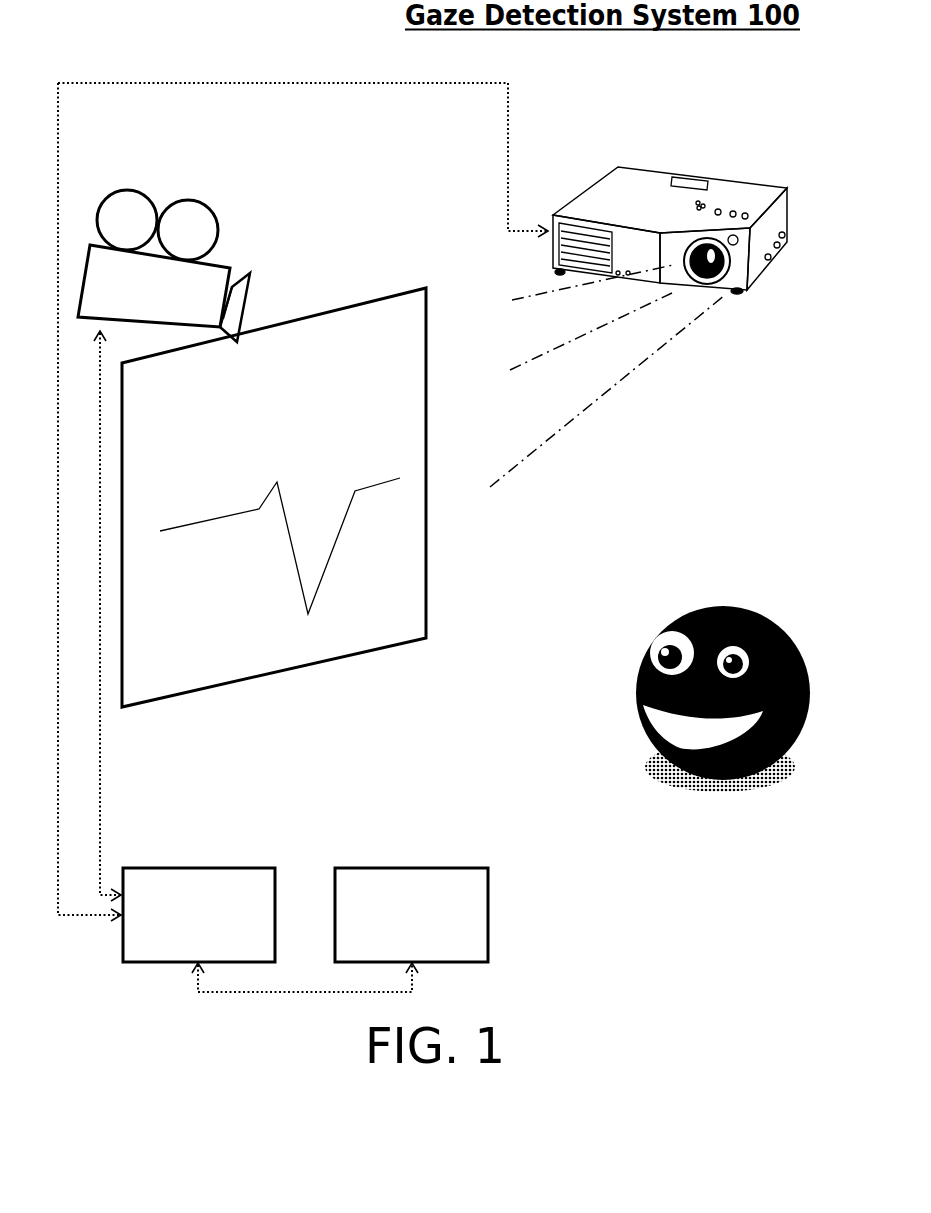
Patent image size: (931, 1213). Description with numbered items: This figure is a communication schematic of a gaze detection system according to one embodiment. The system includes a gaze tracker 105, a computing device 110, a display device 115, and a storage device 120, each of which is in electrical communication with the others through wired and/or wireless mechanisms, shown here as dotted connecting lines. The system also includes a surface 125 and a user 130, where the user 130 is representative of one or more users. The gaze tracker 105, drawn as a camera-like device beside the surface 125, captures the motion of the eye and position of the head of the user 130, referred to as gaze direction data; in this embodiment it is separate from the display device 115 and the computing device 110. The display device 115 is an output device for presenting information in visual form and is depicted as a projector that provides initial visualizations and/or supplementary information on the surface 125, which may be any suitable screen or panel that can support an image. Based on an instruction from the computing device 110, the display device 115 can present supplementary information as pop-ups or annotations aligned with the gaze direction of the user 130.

The gaze tracker 105 is at (215, 210).
The computing device 110 is at (219, 957).
The display device 115 is at (708, 177).
The storage device 120 is at (432, 957).
The surface 125 is at (377, 298).
The user 130 is at (713, 608).